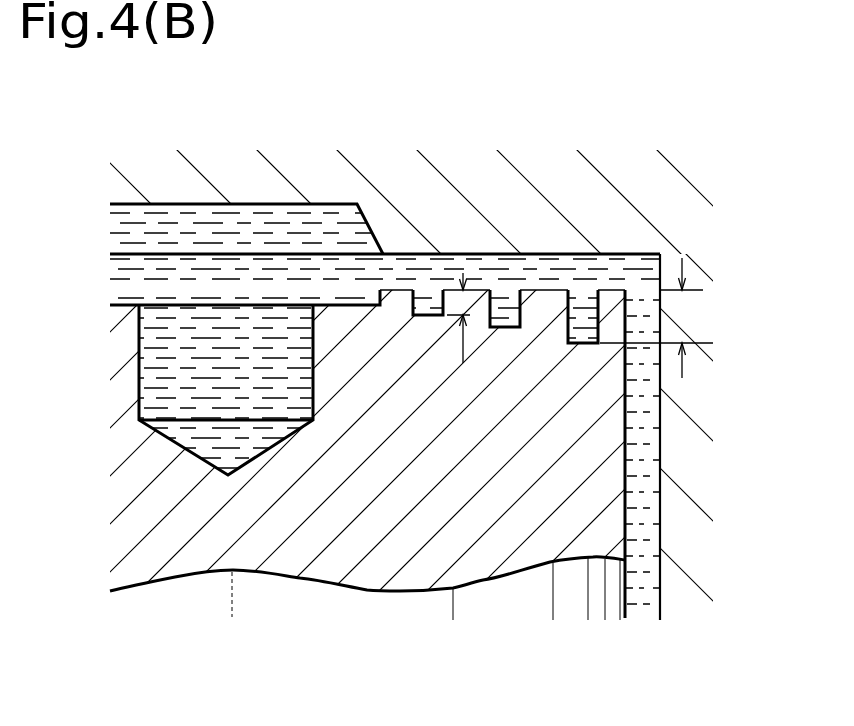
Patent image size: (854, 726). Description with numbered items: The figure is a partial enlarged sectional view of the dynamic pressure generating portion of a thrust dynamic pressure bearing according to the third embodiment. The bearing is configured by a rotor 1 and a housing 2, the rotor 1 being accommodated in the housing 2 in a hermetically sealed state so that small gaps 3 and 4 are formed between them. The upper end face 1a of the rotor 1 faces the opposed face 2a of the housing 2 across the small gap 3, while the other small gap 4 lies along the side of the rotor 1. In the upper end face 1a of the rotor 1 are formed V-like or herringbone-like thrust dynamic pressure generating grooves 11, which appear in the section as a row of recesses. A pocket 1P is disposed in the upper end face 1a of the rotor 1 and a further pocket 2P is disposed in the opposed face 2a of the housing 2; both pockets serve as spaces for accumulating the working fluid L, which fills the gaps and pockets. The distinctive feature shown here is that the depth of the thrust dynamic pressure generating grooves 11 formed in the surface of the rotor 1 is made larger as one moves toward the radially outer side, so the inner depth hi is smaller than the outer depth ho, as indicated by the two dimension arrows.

The rotor 1 is at (630, 530).
The upper end face 1a is at (543, 290).
The pocket 1P is at (270, 378).
The housing 2 is at (637, 243).
The face 2a is at (583, 252).
The pocket 2P is at (143, 222).
The small gap 3 is at (413, 275).
The small gap 4 is at (642, 450).
The thrust dynamic pressure generating grooves 11 is at (505, 325).
The working fluid L is at (642, 407).
The groove depth at radially outer side ho is at (656, 318).
The groove depth at radially inner side hi is at (464, 300).